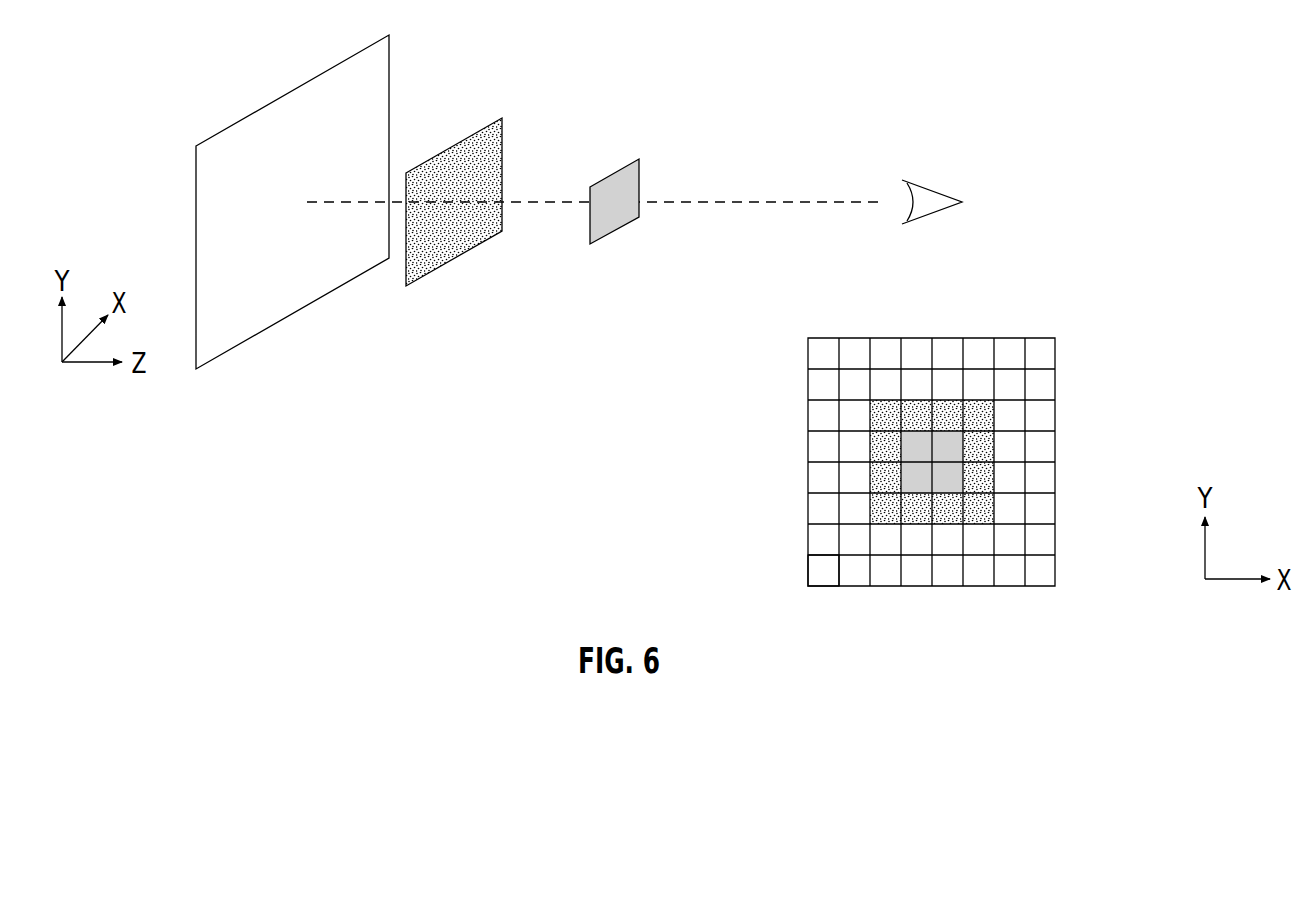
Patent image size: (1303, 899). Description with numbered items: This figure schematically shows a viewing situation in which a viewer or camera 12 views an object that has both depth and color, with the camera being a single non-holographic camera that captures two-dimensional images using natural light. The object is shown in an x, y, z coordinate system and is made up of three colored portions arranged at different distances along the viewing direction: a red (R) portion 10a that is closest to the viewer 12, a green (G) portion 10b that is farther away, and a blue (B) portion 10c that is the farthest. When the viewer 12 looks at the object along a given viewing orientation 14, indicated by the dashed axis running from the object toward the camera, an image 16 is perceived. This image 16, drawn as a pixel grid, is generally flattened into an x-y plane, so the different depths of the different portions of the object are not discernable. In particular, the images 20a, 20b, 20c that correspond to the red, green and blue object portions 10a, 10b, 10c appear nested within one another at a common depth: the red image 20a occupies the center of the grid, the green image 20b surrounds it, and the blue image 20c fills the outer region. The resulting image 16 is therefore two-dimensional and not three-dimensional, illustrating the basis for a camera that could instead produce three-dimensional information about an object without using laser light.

The red portion 10a is at (615, 172).
The green portion 10b is at (468, 137).
The blue portion 10c is at (293, 88).
The viewer or camera 12 is at (941, 164).
The viewing orientation 14 is at (732, 202).
The image 16 is at (780, 442).
The image of red portion 20a is at (902, 470).
The image of green portion 20b is at (882, 504).
The image of blue portion 20c is at (817, 567).